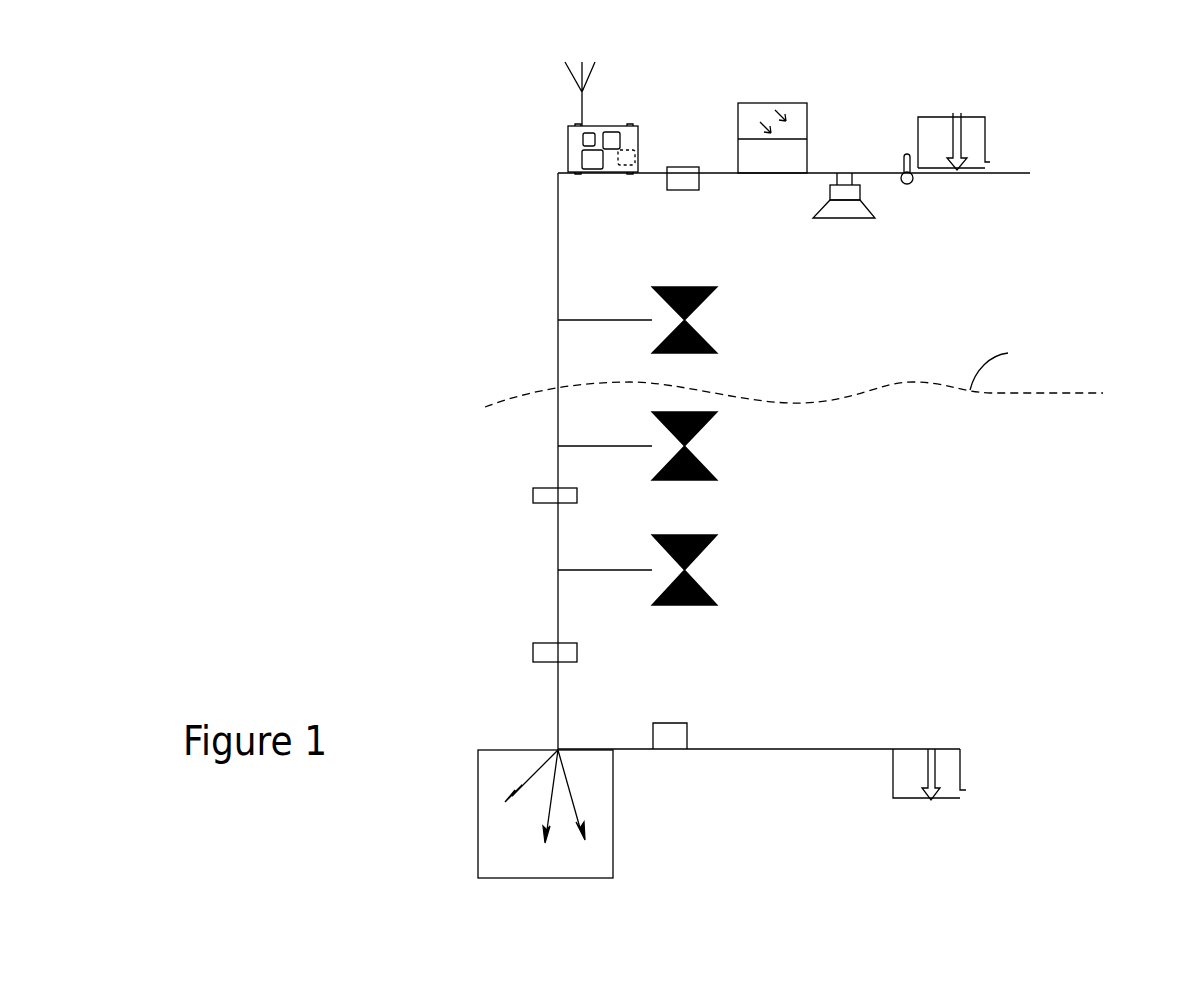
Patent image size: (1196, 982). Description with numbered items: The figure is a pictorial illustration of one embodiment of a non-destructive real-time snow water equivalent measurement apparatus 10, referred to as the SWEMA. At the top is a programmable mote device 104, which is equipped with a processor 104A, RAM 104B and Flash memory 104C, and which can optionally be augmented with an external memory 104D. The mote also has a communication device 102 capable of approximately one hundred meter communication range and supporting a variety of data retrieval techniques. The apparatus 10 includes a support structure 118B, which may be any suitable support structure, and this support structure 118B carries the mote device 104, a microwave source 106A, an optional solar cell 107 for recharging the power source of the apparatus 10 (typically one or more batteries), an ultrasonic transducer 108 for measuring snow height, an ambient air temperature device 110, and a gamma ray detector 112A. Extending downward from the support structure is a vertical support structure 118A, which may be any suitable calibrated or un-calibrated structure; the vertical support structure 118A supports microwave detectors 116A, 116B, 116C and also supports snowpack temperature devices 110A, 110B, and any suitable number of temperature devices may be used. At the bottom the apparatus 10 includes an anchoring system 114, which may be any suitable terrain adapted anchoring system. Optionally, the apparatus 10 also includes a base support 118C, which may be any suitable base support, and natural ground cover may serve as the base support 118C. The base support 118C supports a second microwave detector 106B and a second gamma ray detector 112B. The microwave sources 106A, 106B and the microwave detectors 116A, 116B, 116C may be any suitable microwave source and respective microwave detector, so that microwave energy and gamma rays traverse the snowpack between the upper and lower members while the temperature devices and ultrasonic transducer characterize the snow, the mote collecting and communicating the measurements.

The SWE measurement apparatus 10 is at (465, 77).
The communication device 102 is at (578, 110).
The programmable mote device 104 is at (598, 148).
The processor 104A is at (590, 172).
The RAM 104B is at (612, 130).
The Flash memory 104C is at (583, 140).
The external memory 104D is at (637, 155).
The microwave source 106A is at (683, 190).
The second microwave detector 106B is at (665, 722).
The solar cell 107 is at (790, 104).
The ultrasonic transducer 108 is at (845, 218).
The ambient air temperature device 110 is at (903, 165).
The snowpack temperature device 110A is at (533, 652).
The snowpack temperature device 110B is at (533, 493).
The gamma ray detector 112A is at (986, 140).
The second gamma ray detector 112B is at (960, 768).
The anchoring system 114 is at (555, 879).
The microwave detector 116A is at (695, 310).
The microwave detector 116B is at (695, 437).
The microwave detector 116C is at (695, 555).
The vertical support structure 118A is at (558, 553).
The support structure 118B is at (1010, 174).
The base support 118C is at (790, 747).